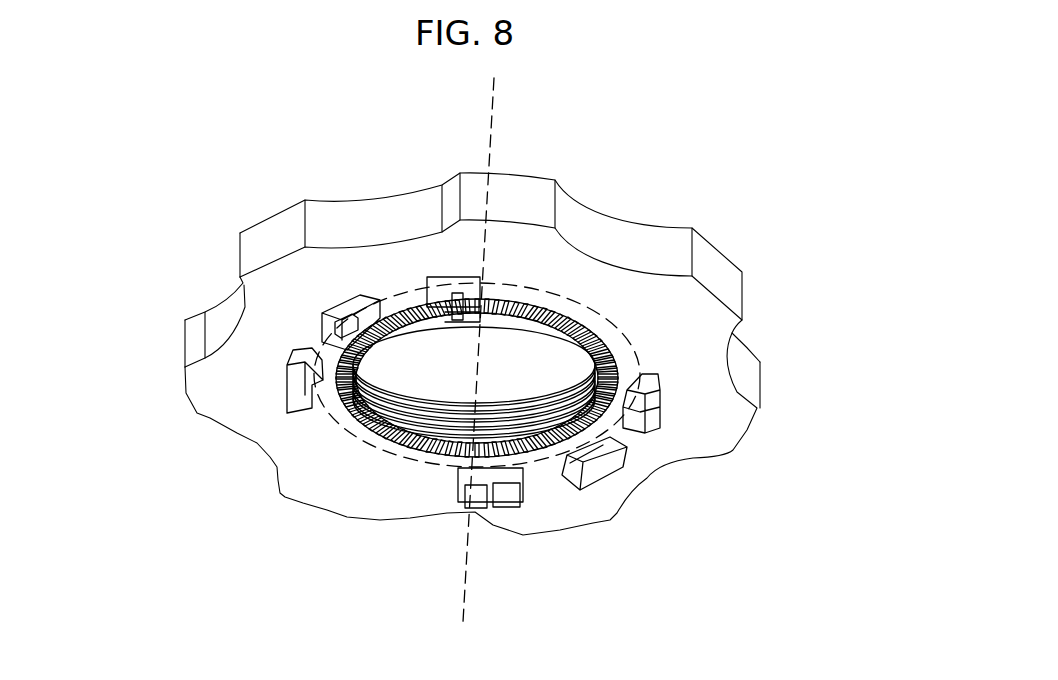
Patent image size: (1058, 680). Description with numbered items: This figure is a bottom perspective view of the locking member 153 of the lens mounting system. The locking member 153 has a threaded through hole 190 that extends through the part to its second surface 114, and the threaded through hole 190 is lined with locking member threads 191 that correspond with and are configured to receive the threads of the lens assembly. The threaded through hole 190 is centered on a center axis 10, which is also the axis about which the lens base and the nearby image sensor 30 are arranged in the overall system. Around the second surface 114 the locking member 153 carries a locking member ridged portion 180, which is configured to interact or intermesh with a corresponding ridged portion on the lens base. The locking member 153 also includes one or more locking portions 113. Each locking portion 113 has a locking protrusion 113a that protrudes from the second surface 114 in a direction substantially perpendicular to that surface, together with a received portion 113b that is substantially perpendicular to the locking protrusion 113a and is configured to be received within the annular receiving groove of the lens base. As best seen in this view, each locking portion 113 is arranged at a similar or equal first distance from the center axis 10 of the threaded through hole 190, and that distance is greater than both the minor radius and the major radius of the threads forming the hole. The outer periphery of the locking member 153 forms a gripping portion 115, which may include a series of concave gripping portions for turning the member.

The center axis 10 is at (488, 130).
The image sensor 30 is at (540, 296).
The locking member ridged portion 180 is at (565, 320).
The threaded through hole 190 is at (431, 348).
The locking member threads 191 is at (382, 400).
The gripping portion 115 is at (243, 241).
The second surface 114 is at (223, 363).
The locking portion 113 is at (423, 473).
The locking protrusion 113a is at (462, 477).
The received portion 113b is at (463, 468).
The locking member 153 is at (834, 579).